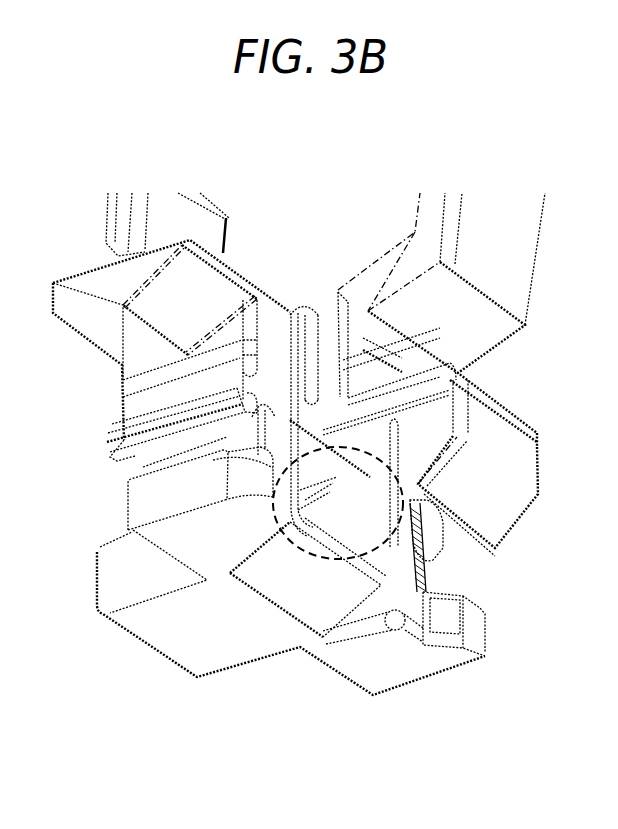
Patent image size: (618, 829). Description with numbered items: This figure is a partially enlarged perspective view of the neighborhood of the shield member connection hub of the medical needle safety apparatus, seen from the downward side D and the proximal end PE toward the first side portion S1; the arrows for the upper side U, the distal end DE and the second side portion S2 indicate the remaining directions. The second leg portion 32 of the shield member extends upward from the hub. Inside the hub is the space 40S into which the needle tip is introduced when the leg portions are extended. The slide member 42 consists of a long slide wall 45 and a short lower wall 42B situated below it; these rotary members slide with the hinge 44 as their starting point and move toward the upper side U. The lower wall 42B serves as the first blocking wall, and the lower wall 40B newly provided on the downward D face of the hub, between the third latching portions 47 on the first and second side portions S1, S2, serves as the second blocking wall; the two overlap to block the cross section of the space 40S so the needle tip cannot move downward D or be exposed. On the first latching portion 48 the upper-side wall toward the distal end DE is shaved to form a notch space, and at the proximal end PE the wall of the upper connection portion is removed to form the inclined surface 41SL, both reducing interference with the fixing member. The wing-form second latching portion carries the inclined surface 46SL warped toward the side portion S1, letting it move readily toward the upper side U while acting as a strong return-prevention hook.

The second leg portion 32 is at (500, 236).
The lower wall 40B is at (310, 580).
The space 40S is at (342, 508).
The inclined surface 41SL is at (191, 282).
The slide member 42 is at (442, 397).
The lower wall 42B is at (494, 425).
The hinge 44 is at (293, 411).
The slide wall 45 is at (369, 393).
The inclined surface 46SL is at (180, 391).
The shield member third latching portion 47 is at (184, 491).
The shield member first latching portion 48 is at (126, 570).
The upper side U is at (322, 165).
The downward side D is at (335, 680).
The first side portion S1 is at (95, 442).
The second side portion S2 is at (455, 695).
The distal end DE is at (123, 647).
The proximal end PE is at (530, 540).